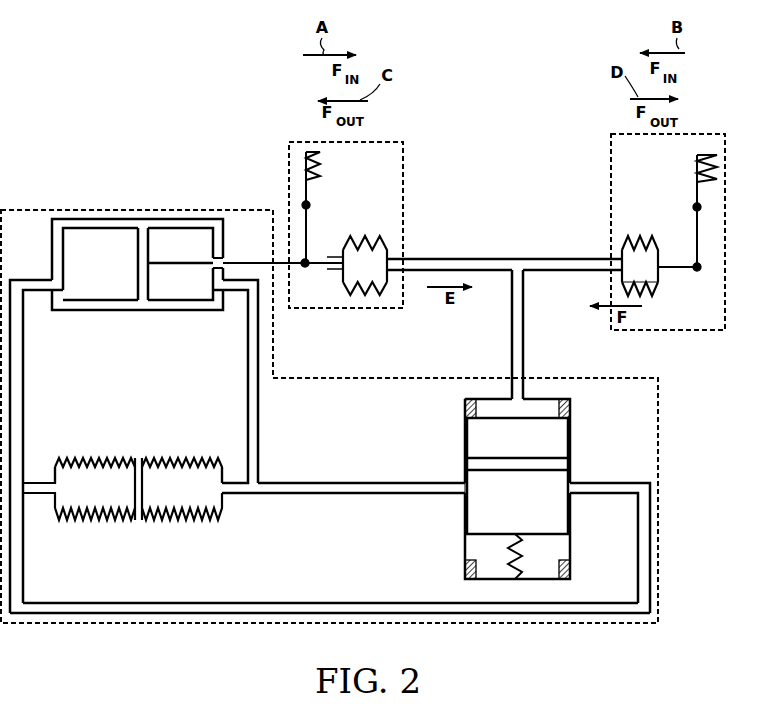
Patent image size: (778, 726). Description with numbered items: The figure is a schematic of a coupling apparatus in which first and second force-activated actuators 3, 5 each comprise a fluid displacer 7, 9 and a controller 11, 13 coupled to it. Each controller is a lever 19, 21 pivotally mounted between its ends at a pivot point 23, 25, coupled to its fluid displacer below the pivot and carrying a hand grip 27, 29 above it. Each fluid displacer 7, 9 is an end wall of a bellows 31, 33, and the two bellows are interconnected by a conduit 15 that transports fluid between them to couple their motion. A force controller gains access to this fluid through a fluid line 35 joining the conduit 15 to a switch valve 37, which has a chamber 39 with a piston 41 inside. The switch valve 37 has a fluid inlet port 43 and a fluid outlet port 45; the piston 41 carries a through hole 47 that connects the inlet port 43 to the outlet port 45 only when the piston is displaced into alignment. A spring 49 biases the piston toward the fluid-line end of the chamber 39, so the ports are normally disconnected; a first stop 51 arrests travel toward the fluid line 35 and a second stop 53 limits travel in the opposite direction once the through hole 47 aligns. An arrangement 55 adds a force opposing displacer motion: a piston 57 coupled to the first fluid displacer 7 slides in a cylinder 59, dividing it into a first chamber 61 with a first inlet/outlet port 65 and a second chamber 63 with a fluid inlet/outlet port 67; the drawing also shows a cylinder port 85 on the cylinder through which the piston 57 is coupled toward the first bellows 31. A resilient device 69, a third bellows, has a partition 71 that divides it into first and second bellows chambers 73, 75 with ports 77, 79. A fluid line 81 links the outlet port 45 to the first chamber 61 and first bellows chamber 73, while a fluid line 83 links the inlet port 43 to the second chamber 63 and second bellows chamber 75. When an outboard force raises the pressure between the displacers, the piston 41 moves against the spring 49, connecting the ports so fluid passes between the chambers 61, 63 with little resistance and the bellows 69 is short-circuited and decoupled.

The first force-activated actuator 3 is at (396, 141).
The second force-activated actuator 5 is at (711, 135).
The fluid displacer 7 is at (343, 254).
The fluid displacer 9 is at (660, 280).
The controller 11 is at (306, 167).
The controller 13 is at (698, 172).
The conduit 15 is at (560, 259).
The lever 19 is at (308, 192).
The lever 21 is at (697, 200).
The pivot point 23 is at (306, 205).
The pivot point 25 is at (697, 207).
The hand grip 27 is at (304, 154).
The hand grip 29 is at (697, 157).
The bellows 31 is at (344, 282).
The bellows 33 is at (645, 296).
The fluid line 35 is at (523, 352).
The switch valve 37 is at (572, 443).
The chamber 39 is at (494, 413).
The piston 41 is at (468, 519).
The fluid inlet port 43 is at (462, 487).
The fluid outlet port 45 is at (588, 493).
The through hole 47 is at (565, 465).
The spring 49 is at (522, 568).
The first stop 51 is at (572, 408).
The second stop 53 is at (465, 570).
The arrangement 55 is at (94, 153).
The piston 57 is at (150, 240).
The cylinder 59 is at (134, 219).
The first chamber 61 is at (86, 244).
The second chamber 63 is at (190, 242).
The first inlet/outlet port 65 is at (35, 280).
The fluid inlet/outlet port 67 is at (234, 302).
The resilient device 69 is at (115, 520).
The partition 71 is at (140, 522).
The first bellows chamber 73 is at (99, 458).
The second bellows chamber 75 is at (174, 458).
The fluid inlet/outlet port 77 is at (43, 482).
The fluid inlet/outlet port 79 is at (235, 479).
The fluid line 81 is at (145, 614).
The fluid line 83 is at (314, 493).
The cylinder port 85 is at (223, 260).